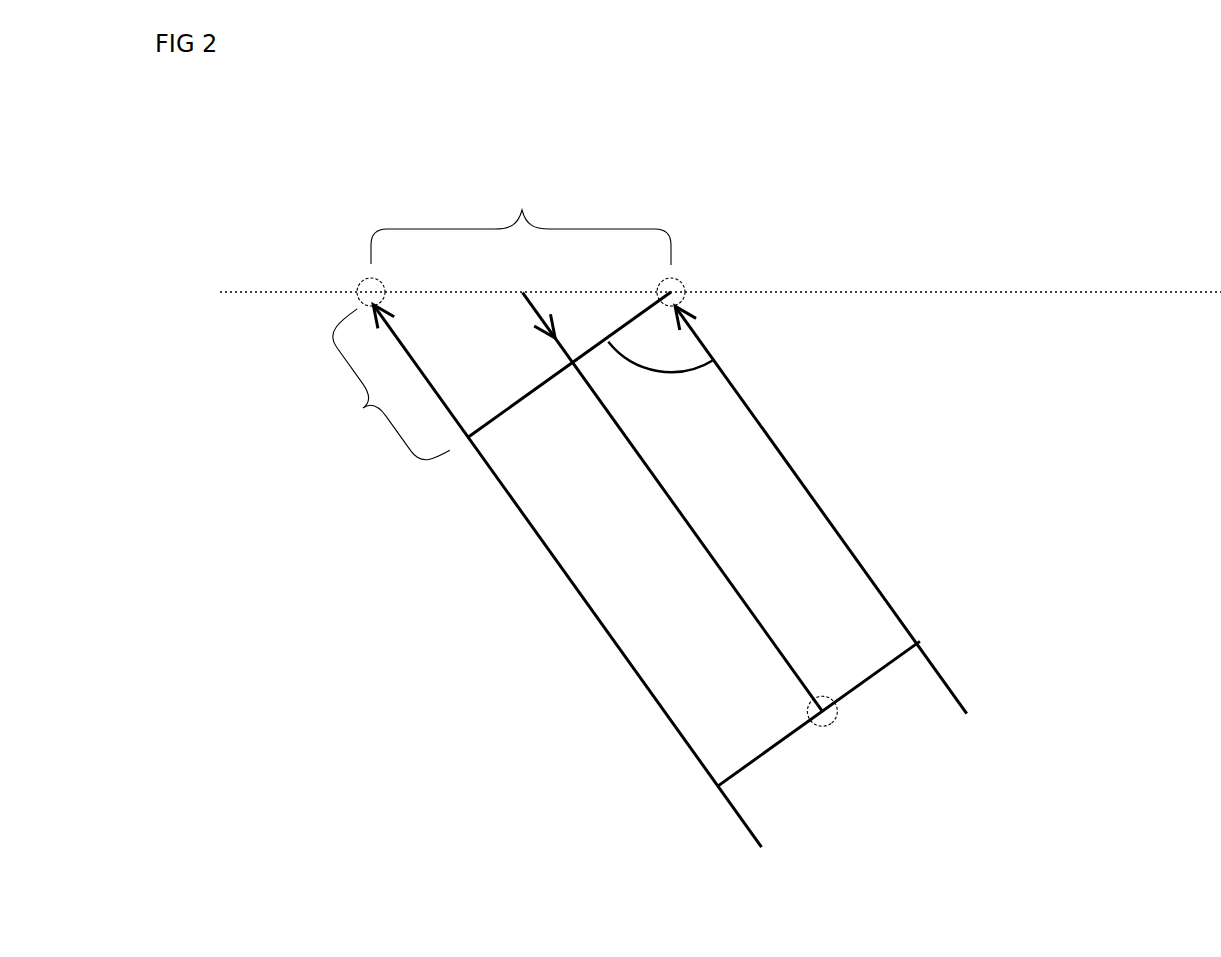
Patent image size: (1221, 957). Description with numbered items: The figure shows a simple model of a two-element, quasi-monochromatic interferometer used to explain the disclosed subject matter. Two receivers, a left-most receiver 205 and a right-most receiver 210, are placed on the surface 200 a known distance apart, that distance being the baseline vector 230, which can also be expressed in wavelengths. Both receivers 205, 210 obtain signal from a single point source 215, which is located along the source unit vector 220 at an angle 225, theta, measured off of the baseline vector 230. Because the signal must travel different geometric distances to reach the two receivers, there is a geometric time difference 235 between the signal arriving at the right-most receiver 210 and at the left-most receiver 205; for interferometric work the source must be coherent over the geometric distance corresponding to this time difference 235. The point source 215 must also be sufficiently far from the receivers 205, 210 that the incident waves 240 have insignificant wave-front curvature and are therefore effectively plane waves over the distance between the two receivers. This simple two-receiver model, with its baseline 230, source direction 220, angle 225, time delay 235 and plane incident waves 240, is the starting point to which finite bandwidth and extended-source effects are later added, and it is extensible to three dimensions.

The surface 200 is at (987, 292).
The left-most receiver 205 is at (357, 284).
The right-most receiver 210 is at (683, 279).
The point source 215 is at (836, 724).
The source unit vector 220 is at (669, 492).
The angle 225 is at (690, 368).
The baseline vector 230 is at (522, 210).
The geometric time difference 235 is at (360, 409).
The incident waves 240 is at (750, 765).